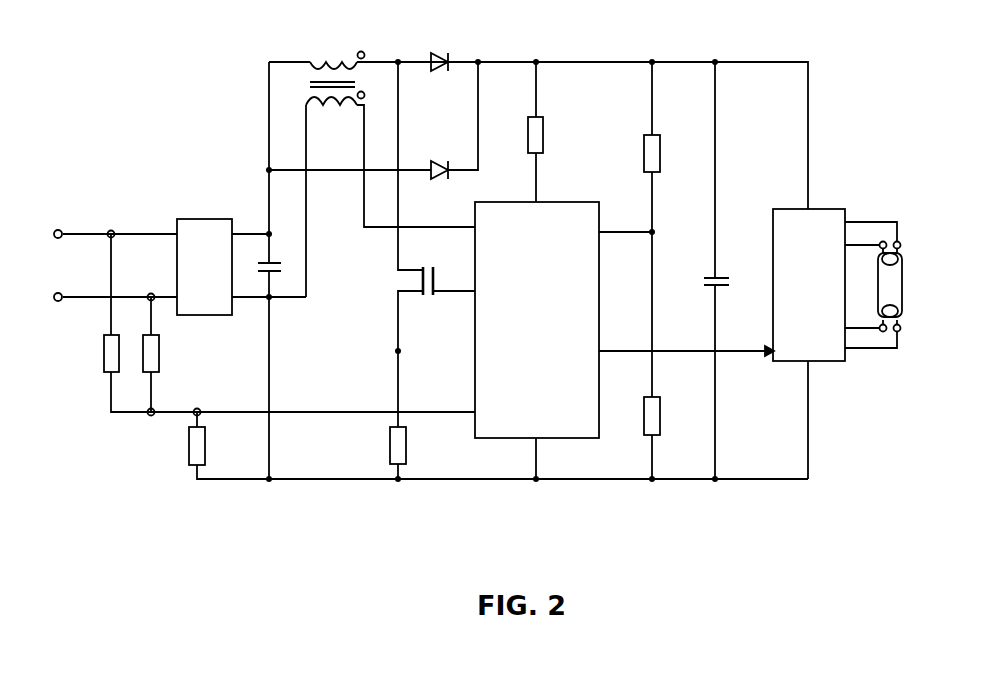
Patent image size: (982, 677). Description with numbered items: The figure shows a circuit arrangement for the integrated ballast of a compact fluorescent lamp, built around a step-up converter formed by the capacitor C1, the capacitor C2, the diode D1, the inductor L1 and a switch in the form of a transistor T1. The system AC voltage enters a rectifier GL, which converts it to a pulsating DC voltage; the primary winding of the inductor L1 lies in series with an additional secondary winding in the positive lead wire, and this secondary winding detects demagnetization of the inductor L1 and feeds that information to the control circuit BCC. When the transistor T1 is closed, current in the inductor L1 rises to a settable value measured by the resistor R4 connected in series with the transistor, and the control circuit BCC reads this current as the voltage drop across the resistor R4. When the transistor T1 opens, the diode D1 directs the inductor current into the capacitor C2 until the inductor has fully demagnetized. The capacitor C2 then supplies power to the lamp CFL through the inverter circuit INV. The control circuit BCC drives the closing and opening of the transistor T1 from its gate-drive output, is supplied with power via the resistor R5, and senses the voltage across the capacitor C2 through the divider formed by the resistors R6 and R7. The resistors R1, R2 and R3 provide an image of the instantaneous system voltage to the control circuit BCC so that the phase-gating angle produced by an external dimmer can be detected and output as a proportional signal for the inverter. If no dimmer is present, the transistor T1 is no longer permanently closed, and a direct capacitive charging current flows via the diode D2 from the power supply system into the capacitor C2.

The rectifier GL is at (204, 256).
The inductor L1 is at (335, 68).
The diode D1 is at (444, 79).
The diode D2 is at (444, 185).
The capacitor C1 is at (281, 257).
The capacitor C2 is at (731, 283).
The transistor T1 is at (425, 297).
The resistor R1 is at (97, 353).
The resistor R2 is at (166, 353).
The resistor R3 is at (211, 446).
The resistor R4 is at (413, 445).
The resistor R5 is at (551, 135).
The resistor R6 is at (667, 153).
The resistor R7 is at (667, 416).
The control circuit BCC is at (537, 320).
The inverter circuit INV is at (809, 285).
The lamp CFL is at (894, 285).